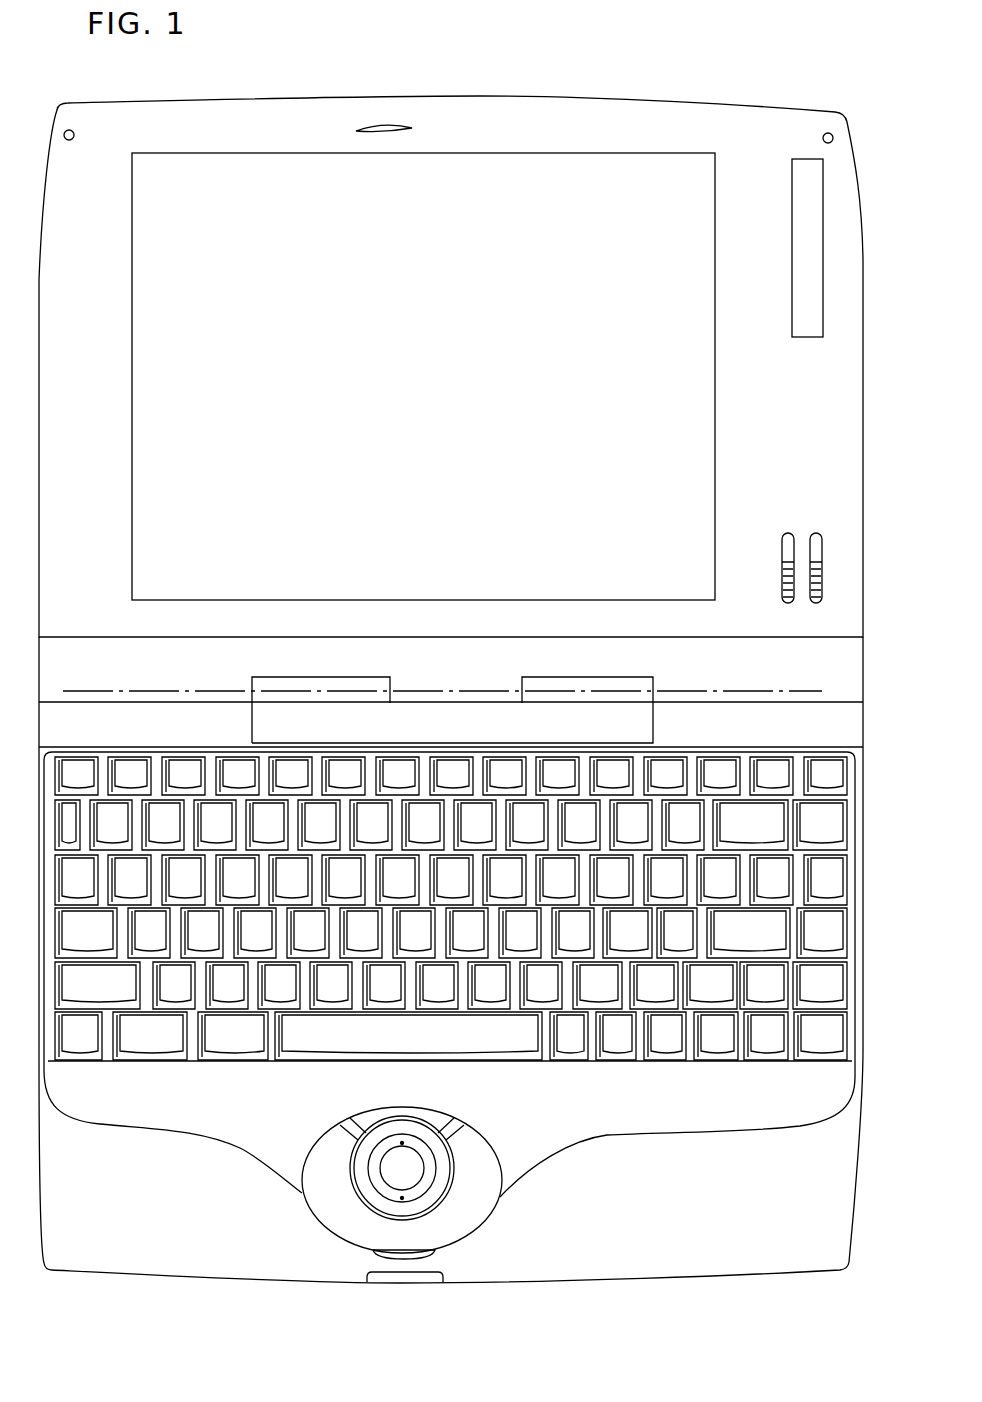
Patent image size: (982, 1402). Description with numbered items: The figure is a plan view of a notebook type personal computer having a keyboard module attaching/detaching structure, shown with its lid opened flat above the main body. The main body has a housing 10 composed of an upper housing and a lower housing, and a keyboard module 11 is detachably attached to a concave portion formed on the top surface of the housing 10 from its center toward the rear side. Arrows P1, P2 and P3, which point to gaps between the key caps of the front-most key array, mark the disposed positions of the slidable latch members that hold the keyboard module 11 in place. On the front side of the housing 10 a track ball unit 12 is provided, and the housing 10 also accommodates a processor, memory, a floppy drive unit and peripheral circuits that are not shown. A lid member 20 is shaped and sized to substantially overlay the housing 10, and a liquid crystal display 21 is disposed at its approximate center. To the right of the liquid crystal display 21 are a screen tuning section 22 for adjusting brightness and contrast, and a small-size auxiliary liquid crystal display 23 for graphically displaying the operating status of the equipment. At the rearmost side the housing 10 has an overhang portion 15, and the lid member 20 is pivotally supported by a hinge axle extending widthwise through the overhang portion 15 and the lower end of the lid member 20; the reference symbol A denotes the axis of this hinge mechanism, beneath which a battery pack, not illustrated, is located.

The housing 10 is at (509, 1287).
The keyboard module 11 is at (623, 1076).
The track ball unit 12 is at (508, 1222).
The overhang portion 15 is at (522, 681).
The lid member 20 is at (566, 93).
The liquid crystal display 21 is at (131, 371).
The screen tuning section 22 is at (807, 506).
The auxiliary liquid crystal display 23 is at (783, 341).
The axis of the hinge mechanism A is at (454, 692).
The disposed position of slidable latch member P1 is at (280, 1072).
The disposed position of slidable latch member P2 is at (545, 1072).
The disposed position of slidable latch member P3 is at (745, 1072).